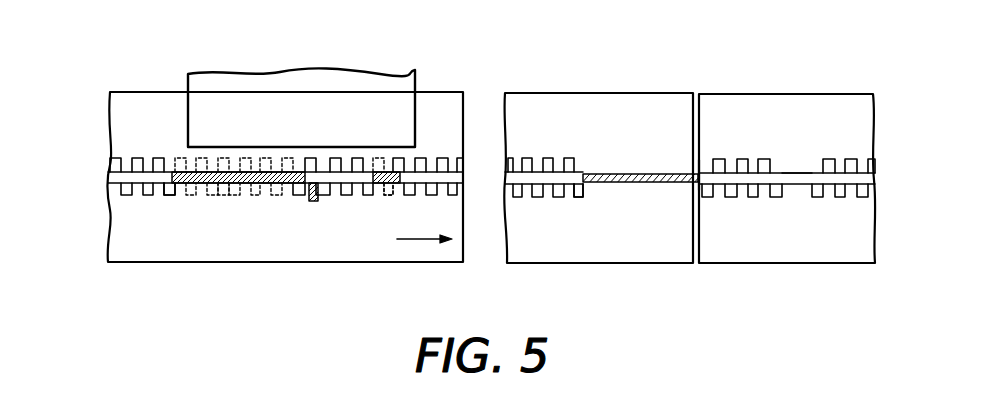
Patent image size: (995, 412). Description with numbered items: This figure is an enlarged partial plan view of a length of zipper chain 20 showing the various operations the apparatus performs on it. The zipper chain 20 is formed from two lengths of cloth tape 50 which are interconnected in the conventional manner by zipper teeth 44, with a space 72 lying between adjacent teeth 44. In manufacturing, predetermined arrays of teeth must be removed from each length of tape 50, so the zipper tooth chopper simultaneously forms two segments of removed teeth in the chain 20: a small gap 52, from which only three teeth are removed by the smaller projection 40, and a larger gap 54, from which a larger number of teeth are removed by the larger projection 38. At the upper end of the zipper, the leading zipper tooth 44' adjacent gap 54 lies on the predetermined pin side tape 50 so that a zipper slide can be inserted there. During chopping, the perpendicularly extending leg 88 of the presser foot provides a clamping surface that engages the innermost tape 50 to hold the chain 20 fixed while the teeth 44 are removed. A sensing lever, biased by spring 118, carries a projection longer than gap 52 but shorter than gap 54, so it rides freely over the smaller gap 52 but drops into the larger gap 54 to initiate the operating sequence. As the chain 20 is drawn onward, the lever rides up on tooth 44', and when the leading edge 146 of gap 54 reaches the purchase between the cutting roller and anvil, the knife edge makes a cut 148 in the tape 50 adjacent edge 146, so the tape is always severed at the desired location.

The zipper chain 20 is at (126, 91).
The larger projection 38 is at (225, 185).
The smaller projection 40 is at (388, 193).
The zipper teeth 44 is at (250, 115).
The leading zipper tooth 44' is at (351, 246).
The tape 50 is at (122, 117).
The segment of removed zipper teeth 52 is at (395, 177).
The segment of removed zipper teeth 54 is at (190, 172).
The space between adjacent teeth 72 is at (313, 200).
The leg of presser foot 88 is at (266, 120).
The spring 118 is at (612, 173).
The leading edge of gap 146 is at (699, 173).
The cut 148 is at (700, 238).